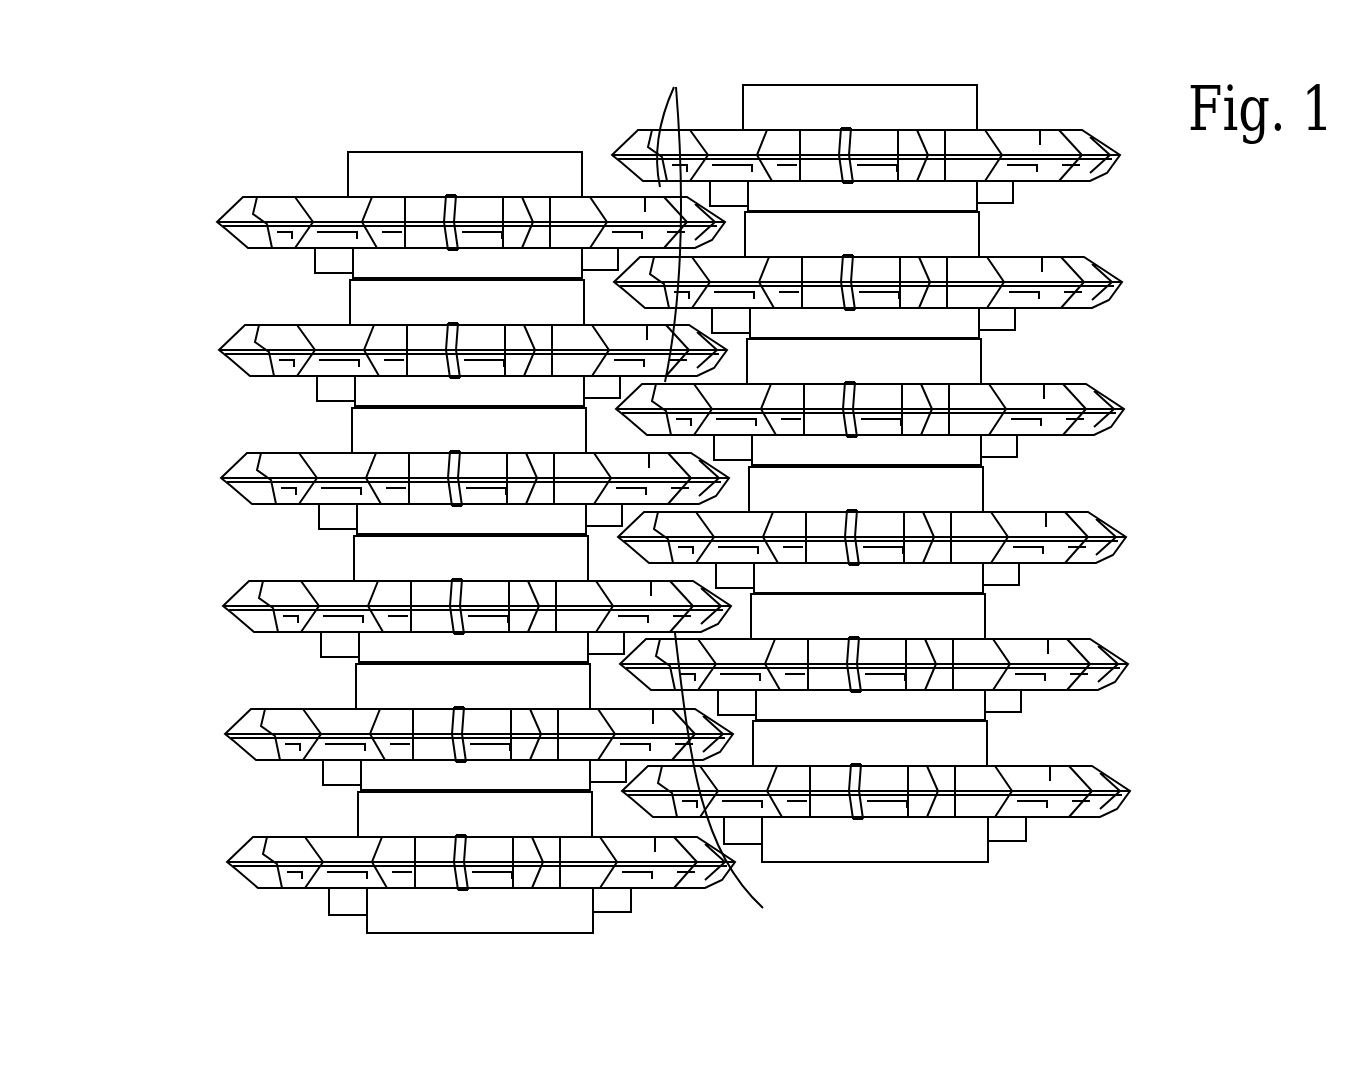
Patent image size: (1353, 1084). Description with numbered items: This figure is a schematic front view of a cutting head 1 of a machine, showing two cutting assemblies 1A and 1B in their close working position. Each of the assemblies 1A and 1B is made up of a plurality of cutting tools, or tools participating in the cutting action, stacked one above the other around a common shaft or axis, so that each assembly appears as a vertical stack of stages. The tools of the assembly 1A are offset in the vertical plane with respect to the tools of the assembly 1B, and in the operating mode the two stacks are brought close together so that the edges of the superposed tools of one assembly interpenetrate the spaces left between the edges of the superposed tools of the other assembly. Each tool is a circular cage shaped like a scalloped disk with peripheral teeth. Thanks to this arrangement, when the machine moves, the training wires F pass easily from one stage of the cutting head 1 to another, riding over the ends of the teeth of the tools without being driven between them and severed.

The cutting head 1 is at (612, 125).
The cutting assembly 1A is at (243, 548).
The cutting assembly 1B is at (1135, 473).
The training wires F is at (722, 490).